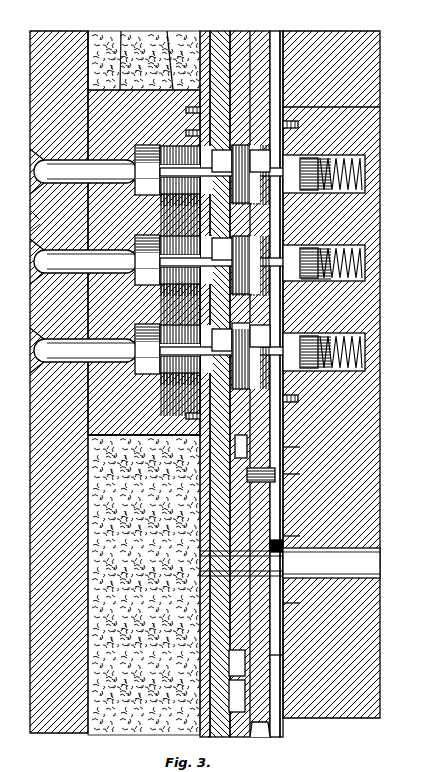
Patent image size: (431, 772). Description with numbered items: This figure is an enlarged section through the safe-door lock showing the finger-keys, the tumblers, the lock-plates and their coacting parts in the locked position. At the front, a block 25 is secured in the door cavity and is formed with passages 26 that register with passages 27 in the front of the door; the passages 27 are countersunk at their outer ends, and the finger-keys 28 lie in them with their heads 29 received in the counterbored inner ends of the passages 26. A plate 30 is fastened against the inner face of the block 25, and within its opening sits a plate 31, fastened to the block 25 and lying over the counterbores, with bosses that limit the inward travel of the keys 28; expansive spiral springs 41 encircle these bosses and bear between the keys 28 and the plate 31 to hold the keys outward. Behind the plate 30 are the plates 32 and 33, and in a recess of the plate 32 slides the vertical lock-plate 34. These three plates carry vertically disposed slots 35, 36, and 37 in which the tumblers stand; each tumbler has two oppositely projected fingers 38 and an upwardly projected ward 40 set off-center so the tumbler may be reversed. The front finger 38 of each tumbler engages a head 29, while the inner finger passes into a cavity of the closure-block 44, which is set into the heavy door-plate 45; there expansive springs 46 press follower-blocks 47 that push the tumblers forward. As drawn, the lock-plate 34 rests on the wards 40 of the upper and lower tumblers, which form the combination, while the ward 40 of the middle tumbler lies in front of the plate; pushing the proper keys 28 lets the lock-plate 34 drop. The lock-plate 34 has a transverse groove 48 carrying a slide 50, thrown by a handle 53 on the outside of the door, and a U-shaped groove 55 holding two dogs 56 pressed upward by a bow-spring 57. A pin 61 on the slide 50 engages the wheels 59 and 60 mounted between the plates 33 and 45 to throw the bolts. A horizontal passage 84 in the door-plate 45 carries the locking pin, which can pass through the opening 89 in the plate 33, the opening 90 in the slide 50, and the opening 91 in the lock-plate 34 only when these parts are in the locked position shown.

The block 25 is at (177, 27).
The passages 26 is at (124, 34).
The passages 27 is at (38, 364).
The finger-keys 28 is at (83, 261).
The heads 29 is at (174, 280).
The plate 30 is at (205, 31).
The plate 31 is at (60, 222).
The plate 32 is at (224, 31).
The plate 33 is at (277, 32).
The lock-plate 34 is at (250, 31).
The slots 35 is at (222, 250).
The slots 36 is at (223, 249).
The slots 37 is at (260, 248).
The fingers 38 is at (289, 190).
The upwardly-projected ward 40 is at (251, 373).
The expansive spiral springs 41 is at (200, 396).
The closure-block 44 is at (360, 402).
The door-plate 45 is at (340, 34).
The expansive springs 46 is at (366, 165).
The follower-blocks 47 is at (378, 191).
The transverse groove 48 is at (250, 437).
The slide 50 is at (282, 516).
The handle 53 is at (300, 447).
The U-shaped groove 55 is at (245, 690).
The dogs 56 is at (245, 662).
The bow-spring 57 is at (252, 724).
The wheel 59 is at (277, 655).
The wheel 60 is at (285, 422).
The pin 61 is at (283, 474).
The passage 84 is at (290, 563).
The opening 89 is at (285, 603).
The opening 90 is at (290, 536).
The opening 91 is at (212, 567).